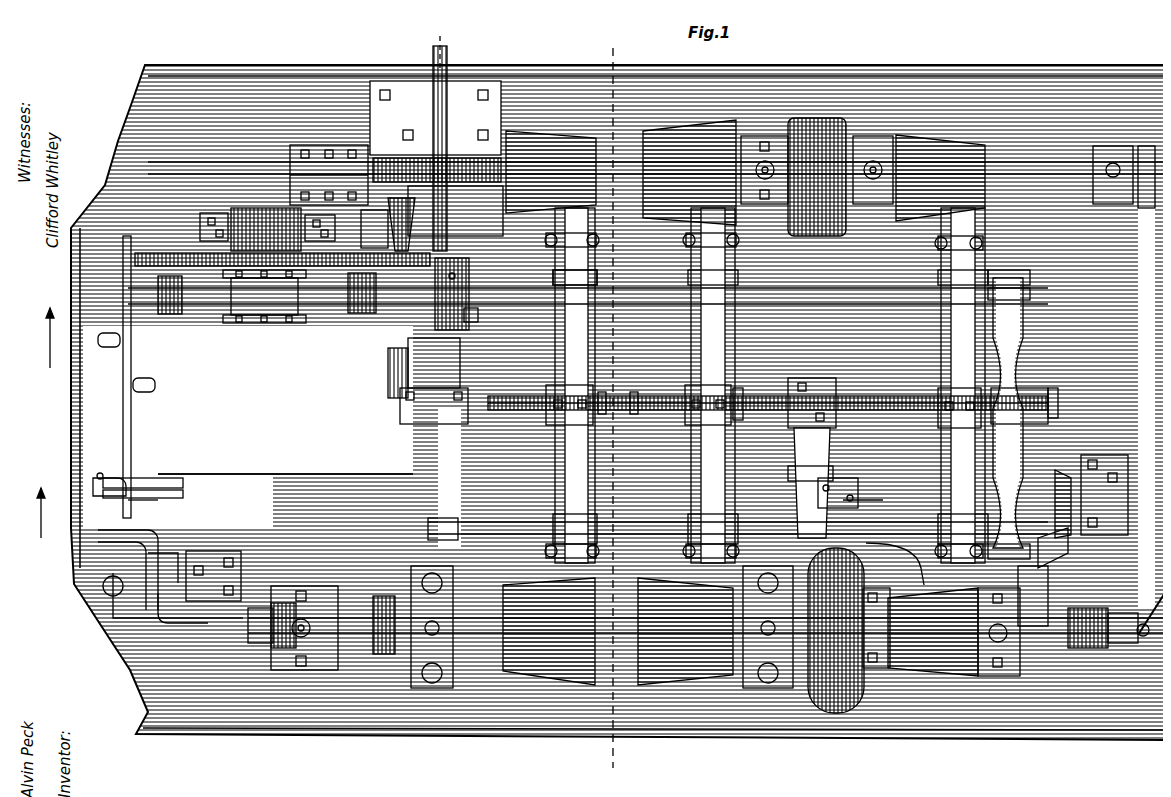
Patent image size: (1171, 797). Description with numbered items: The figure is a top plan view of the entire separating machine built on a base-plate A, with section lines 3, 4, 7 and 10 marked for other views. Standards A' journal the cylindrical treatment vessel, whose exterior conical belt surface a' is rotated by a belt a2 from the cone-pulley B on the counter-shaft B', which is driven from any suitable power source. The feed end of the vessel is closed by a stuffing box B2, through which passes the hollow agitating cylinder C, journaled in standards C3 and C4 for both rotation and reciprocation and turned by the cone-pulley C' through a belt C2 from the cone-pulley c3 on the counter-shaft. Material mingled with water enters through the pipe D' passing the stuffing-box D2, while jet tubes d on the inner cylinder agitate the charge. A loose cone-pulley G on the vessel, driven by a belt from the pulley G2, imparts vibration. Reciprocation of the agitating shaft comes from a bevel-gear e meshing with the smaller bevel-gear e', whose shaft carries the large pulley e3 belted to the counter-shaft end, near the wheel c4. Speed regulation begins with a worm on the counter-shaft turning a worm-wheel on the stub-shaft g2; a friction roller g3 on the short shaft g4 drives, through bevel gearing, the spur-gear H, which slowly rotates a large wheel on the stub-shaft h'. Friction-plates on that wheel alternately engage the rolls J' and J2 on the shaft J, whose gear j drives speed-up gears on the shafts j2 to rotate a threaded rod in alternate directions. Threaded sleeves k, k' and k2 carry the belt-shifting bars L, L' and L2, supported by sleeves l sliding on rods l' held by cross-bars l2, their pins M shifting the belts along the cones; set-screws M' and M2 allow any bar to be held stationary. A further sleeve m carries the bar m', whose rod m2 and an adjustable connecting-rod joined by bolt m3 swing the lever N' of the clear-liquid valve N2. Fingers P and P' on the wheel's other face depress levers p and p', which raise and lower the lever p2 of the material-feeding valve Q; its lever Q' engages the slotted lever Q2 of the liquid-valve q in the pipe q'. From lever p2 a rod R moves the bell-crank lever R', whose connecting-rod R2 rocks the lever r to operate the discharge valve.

The base-plate A is at (617, 402).
The standards A' is at (724, 632).
The cone-pulley B is at (689, 159).
The counter-shaft B' is at (655, 162).
The packing or stuffing box B2 is at (368, 595).
The agitating cylinder or shaft C is at (705, 631).
The cone-pulley C' is at (943, 646).
The belt C2 is at (985, 381).
The standard C3 is at (275, 640).
The standards C4 is at (849, 630).
The pipe or conduit D' is at (156, 603).
The stuffing-box D2 is at (250, 600).
The loose cone-pulley G is at (549, 641).
The pulley G2 is at (512, 125).
The stub-shaft g2 is at (440, 52).
The friction wheel or roller g3 is at (478, 238).
The short longitudinal shaft g4 is at (495, 210).
The small spur-gear H is at (425, 275).
The stub-shaft h' is at (308, 175).
The shaft J is at (588, 306).
The friction wheel or roll J' is at (360, 309).
The friction wheel or roll J2 is at (162, 307).
The gear j is at (455, 355).
The short longitudinal shafts j2 is at (462, 380).
The internally-threaded sleeve k is at (768, 392).
The internally-threaded sleeve k' is at (695, 390).
The internally-threaded sleeve k2 is at (598, 390).
The belt-shifting bar L is at (950, 385).
The belt-shifting bar L' is at (718, 385).
The belt-shifting bar L2 is at (561, 385).
The sleeves l is at (738, 395).
The rods l' is at (690, 481).
The cross-bars l2 is at (1012, 340).
The vertical pins M is at (839, 352).
The set-screw M' is at (787, 391).
The set-screws M2 is at (935, 290).
The threaded sleeve m is at (825, 456).
The bar m' is at (823, 475).
The rod m2 is at (895, 564).
The bolt m3 is at (1088, 619).
The lever N' is at (1123, 616).
The clear-agitating-liquid valve N2 is at (1128, 650).
The finger P is at (280, 237).
The finger P' is at (274, 228).
The lever p is at (126, 377).
The lever p' is at (198, 255).
The lever p2 is at (150, 500).
The material-feeding valve Q is at (160, 561).
The lever Q' is at (204, 576).
The lever Q2 is at (140, 575).
The liquid-valve q is at (148, 595).
The pipe q' is at (200, 637).
The rod R is at (143, 471).
The bell-crank lever R' is at (107, 465).
The connecting-rod R2 is at (375, 470).
The lever r is at (863, 503).
The conical belt surface or pulley a' is at (685, 643).
The belt a2 is at (740, 378).
The cone-pulley c3 is at (912, 130).
The wheel c4 is at (1150, 165).
The hollow projections or tubes d is at (1148, 640).
The pivot n is at (1160, 609).
The bevel-gear e is at (1049, 535).
The smaller bevel-gear e' is at (1053, 497).
The large pulley e3 is at (1104, 480).
The section line 3 is at (452, 28).
The section line 4 is at (70, 321).
The section line 7 is at (625, 740).
The section line 10 is at (70, 500).